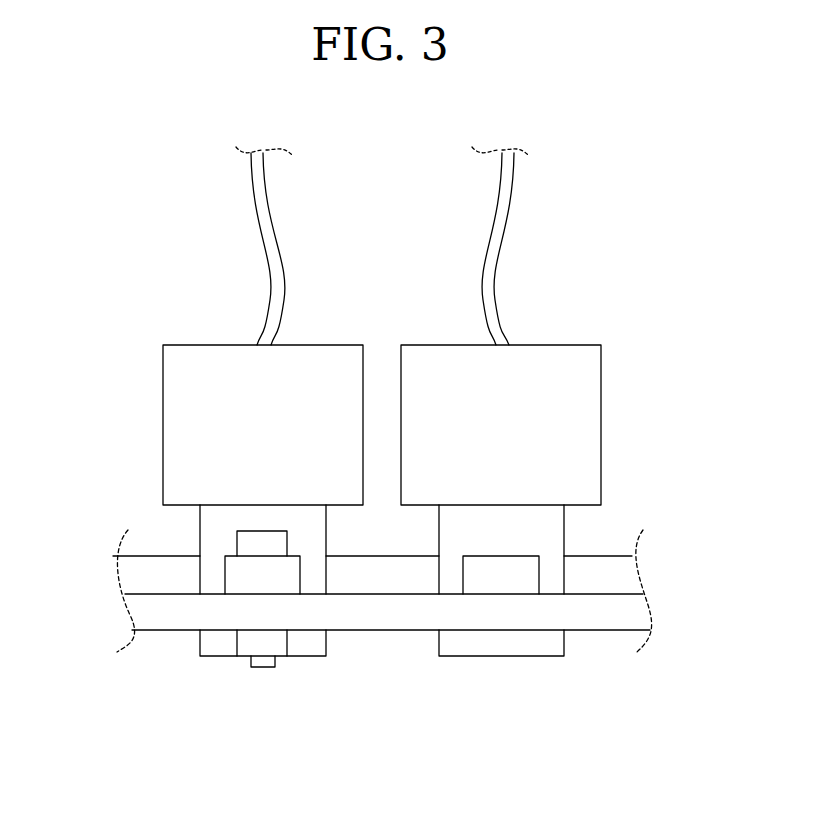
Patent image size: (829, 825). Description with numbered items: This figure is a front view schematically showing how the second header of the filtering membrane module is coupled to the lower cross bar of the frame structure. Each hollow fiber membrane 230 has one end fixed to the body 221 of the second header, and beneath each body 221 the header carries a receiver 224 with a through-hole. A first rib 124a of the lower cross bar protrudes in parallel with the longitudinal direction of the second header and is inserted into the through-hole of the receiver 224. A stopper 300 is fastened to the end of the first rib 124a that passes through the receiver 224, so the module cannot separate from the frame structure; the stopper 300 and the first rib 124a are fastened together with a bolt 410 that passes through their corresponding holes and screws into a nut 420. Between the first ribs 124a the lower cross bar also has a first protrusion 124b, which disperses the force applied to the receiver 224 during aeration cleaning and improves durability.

The hollow fiber membrane 230 is at (267, 240).
The body of the second header 221 is at (188, 392).
The receiver 224 is at (222, 533).
The bolt 410 is at (272, 545).
The nut 420 is at (247, 645).
The first rib 124a is at (240, 576).
The first protrusion 124b is at (142, 572).
The stopper 300 is at (620, 613).